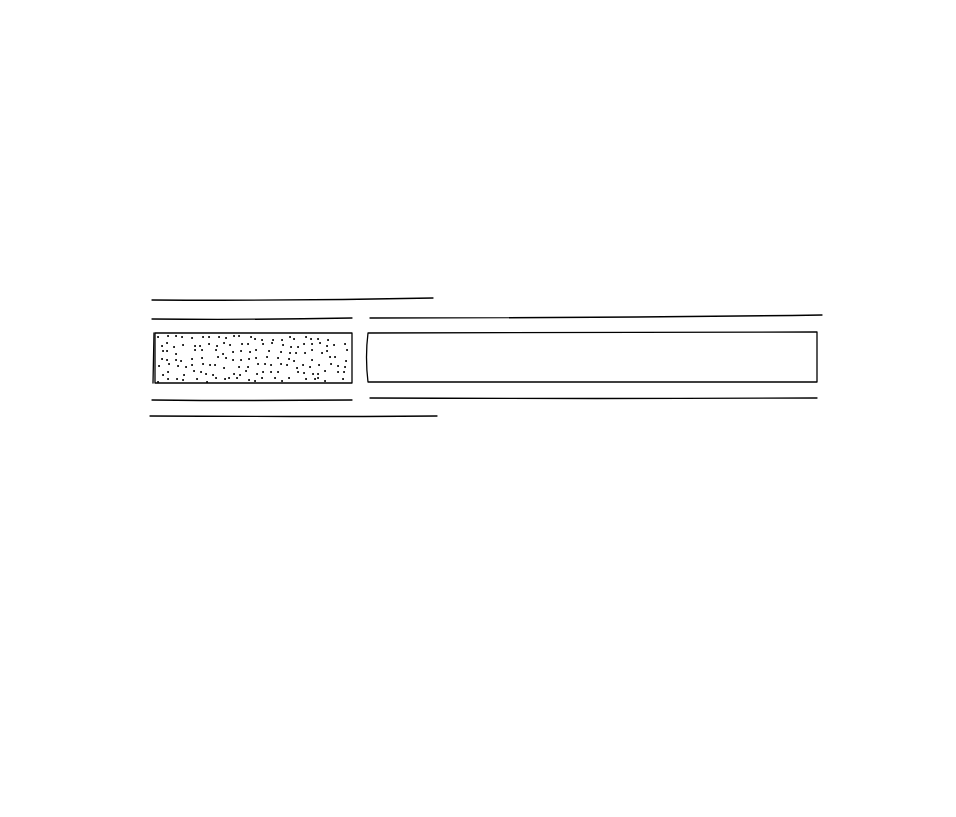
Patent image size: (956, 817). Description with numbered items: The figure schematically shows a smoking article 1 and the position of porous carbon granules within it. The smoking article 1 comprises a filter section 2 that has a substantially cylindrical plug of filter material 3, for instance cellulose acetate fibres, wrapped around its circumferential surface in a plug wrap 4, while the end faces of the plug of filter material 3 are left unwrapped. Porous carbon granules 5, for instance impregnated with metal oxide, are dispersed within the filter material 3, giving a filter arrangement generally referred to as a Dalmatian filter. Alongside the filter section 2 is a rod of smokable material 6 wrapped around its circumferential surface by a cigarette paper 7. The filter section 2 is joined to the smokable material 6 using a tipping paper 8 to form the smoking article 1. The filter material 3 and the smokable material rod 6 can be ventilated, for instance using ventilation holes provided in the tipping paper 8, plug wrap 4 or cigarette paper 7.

The smoking article 1 is at (213, 157).
The filter section 2 is at (357, 438).
The plug of filter material 3 is at (225, 355).
The plug wrap 4 is at (290, 319).
The porous carbon granules 5 is at (192, 355).
The rod of smokable material 6 is at (613, 365).
The cigarette paper 7 is at (620, 315).
The tipping paper 8 is at (242, 299).